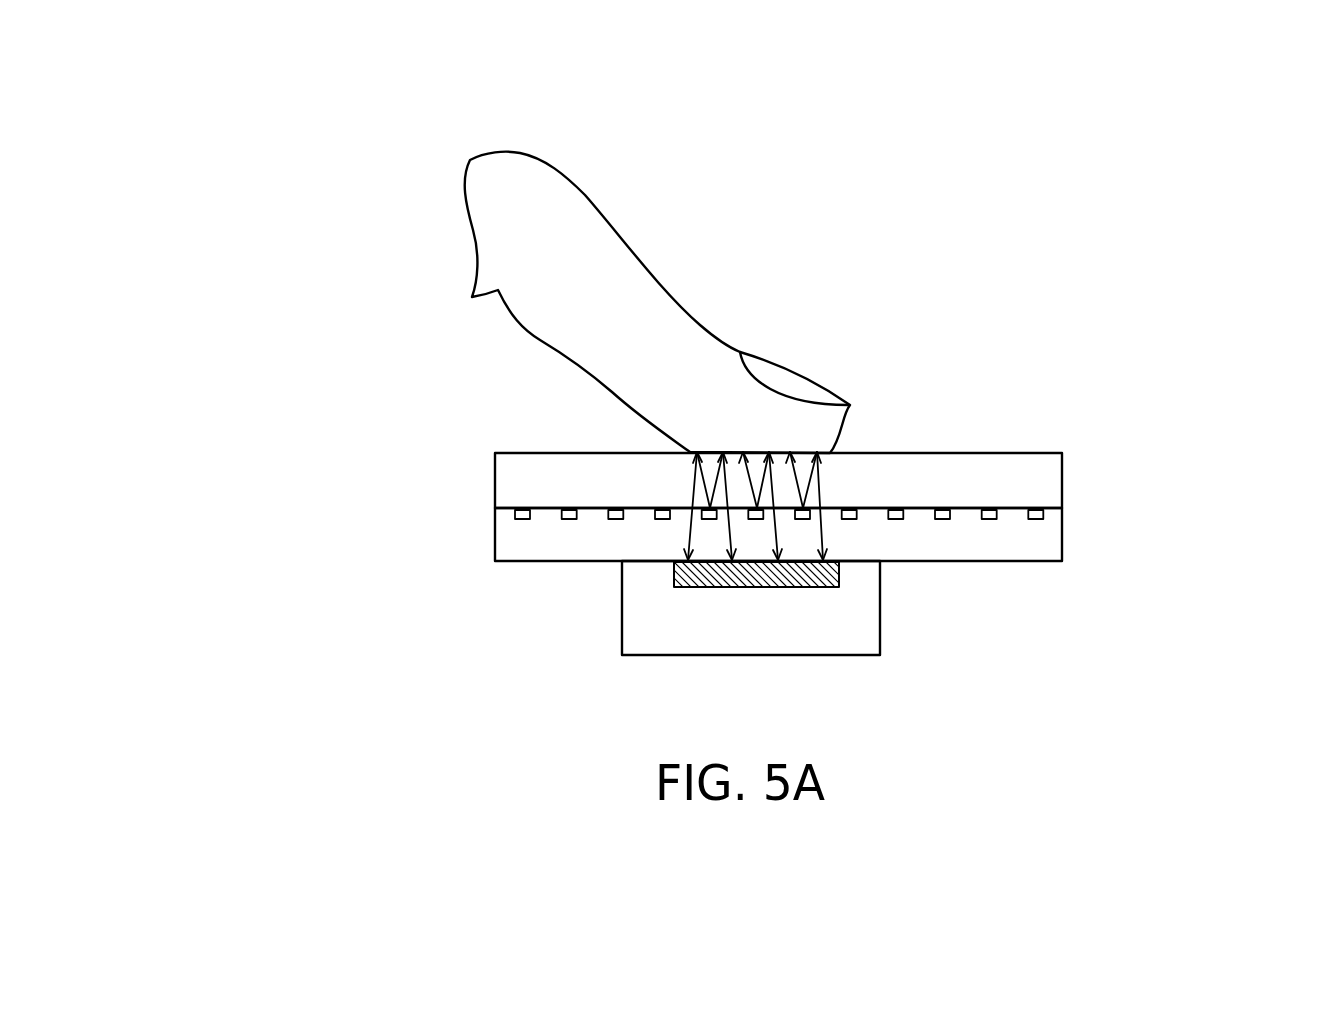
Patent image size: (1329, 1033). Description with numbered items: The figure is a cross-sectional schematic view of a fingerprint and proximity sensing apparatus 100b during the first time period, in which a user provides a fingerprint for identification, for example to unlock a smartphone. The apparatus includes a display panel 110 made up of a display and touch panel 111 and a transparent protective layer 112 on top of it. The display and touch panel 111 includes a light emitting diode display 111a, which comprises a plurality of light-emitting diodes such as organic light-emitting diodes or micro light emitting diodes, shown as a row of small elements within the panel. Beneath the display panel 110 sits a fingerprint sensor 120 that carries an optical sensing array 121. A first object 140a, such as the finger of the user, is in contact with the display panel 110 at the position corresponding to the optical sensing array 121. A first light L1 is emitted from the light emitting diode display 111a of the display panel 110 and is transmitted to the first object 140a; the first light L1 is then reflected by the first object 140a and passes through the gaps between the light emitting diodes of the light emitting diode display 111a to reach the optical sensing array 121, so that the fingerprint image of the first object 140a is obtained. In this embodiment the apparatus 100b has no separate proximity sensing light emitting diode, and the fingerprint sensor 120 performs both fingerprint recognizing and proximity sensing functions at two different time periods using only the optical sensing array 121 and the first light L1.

The fingerprint and proximity sensing apparatus 100b is at (717, 371).
The display panel 110 is at (664, 289).
The display and touch panel 111 is at (1053, 545).
The light emitting diode display 111a is at (1036, 513).
The transparent protective layer 112 is at (1053, 480).
The fingerprint sensor 120 is at (648, 627).
The optical sensing array 121 is at (674, 580).
The first object 140a is at (487, 232).
The first light L1 is at (826, 497).